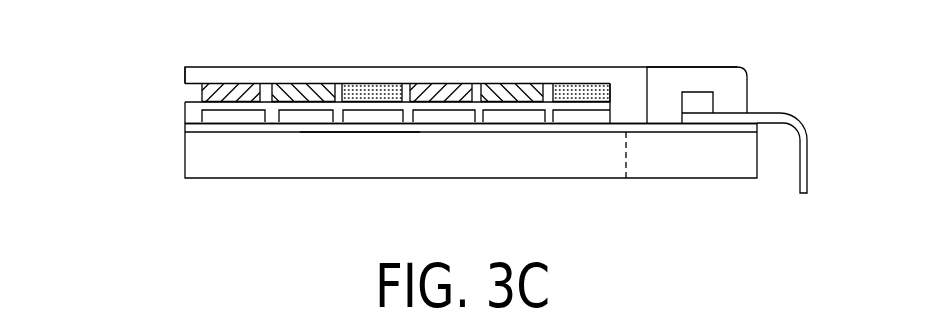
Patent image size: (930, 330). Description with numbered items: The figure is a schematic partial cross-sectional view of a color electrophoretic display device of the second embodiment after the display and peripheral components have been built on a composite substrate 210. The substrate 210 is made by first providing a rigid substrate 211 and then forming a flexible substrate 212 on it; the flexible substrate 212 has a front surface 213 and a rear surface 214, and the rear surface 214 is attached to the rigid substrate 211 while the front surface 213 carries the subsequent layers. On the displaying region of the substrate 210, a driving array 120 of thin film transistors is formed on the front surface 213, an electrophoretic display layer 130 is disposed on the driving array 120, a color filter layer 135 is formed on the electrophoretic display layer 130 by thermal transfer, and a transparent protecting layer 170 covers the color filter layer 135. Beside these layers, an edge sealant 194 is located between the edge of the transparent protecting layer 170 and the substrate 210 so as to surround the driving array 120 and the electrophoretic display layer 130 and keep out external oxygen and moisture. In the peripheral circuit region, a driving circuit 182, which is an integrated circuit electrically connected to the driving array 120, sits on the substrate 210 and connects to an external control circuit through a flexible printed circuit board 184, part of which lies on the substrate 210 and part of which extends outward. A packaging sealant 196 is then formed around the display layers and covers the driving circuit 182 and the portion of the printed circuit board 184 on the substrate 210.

The driving array 120 is at (201, 110).
The electrophoretic display layer 130 is at (190, 104).
The color filter layer 135 is at (522, 95).
The transparent protecting layer 170 is at (432, 78).
The driving circuit 182 is at (700, 95).
The printed circuit board 184 is at (805, 172).
The edge sealant 194 is at (628, 95).
The packaging sealant 196 is at (742, 85).
The substrate 210 is at (98, 147).
The rigid substrate 211 is at (184, 165).
The flexible substrate 212 is at (184, 128).
The front surface 213 is at (270, 122).
The rear surface 214 is at (360, 133).